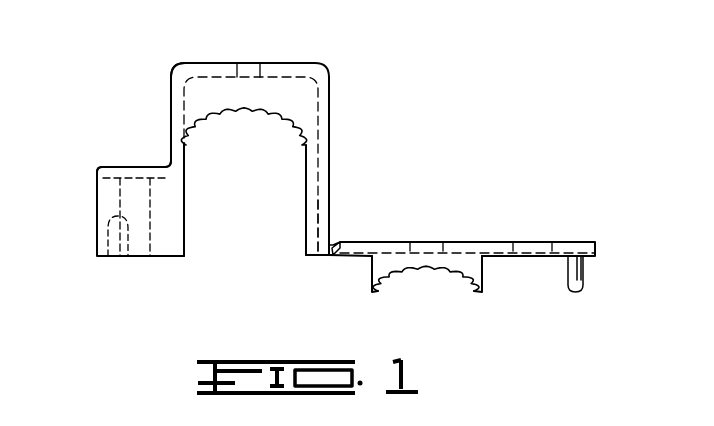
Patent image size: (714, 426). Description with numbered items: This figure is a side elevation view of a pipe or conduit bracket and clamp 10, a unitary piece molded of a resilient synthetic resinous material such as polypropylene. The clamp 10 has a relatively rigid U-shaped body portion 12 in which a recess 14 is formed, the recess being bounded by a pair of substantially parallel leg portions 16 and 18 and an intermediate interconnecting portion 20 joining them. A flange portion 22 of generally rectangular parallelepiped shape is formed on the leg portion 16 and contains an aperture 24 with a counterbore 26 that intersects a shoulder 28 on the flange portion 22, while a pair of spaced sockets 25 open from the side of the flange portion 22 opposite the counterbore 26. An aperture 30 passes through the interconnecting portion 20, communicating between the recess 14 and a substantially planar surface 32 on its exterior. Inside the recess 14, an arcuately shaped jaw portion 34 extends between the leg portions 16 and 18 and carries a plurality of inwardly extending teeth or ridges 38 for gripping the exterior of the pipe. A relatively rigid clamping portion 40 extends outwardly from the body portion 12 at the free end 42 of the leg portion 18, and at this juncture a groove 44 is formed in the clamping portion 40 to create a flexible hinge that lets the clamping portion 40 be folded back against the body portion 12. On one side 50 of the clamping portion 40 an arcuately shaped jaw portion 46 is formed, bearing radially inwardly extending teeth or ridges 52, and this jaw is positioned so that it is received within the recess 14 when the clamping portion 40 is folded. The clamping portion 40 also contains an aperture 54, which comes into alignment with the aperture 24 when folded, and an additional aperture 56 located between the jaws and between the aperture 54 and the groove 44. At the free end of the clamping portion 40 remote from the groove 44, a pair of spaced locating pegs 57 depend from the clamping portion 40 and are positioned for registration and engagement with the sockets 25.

The pipe or conduit bracket and clamp 10 is at (327, 68).
The U-shaped body portion 12 is at (329, 133).
The recess 14 is at (300, 168).
The leg portion 16 is at (170, 223).
The leg portion 18 is at (311, 208).
The intermediate interconnecting portion 20 is at (272, 66).
The flange portion 22 is at (102, 203).
The aperture 24 is at (126, 200).
The spaced sockets 25 is at (115, 262).
The counterbore 26 is at (112, 163).
The shoulder 28 is at (146, 178).
The aperture 30 is at (238, 77).
The planar surface 32 is at (210, 63).
The arcuately shaped jaw portion 34 is at (223, 100).
The teeth or ridges 38 is at (261, 118).
The clamping portion 40 is at (378, 241).
The free end 42 is at (325, 257).
The groove 44 is at (335, 248).
The arcuately shaped jaw portion 46 is at (407, 268).
The one side 50 is at (357, 258).
The teeth or ridges 52 is at (440, 272).
The aperture 54 is at (515, 252).
The additional aperture 56 is at (412, 252).
The locating pegs 57 is at (580, 281).